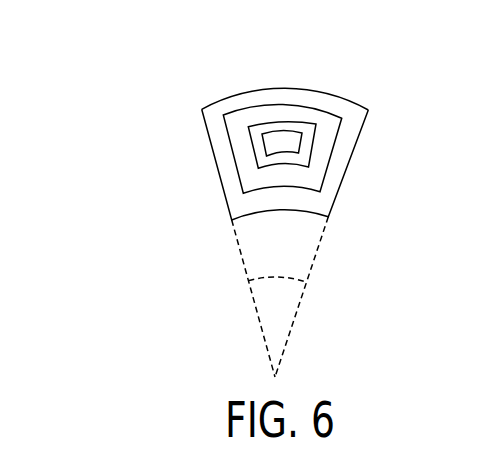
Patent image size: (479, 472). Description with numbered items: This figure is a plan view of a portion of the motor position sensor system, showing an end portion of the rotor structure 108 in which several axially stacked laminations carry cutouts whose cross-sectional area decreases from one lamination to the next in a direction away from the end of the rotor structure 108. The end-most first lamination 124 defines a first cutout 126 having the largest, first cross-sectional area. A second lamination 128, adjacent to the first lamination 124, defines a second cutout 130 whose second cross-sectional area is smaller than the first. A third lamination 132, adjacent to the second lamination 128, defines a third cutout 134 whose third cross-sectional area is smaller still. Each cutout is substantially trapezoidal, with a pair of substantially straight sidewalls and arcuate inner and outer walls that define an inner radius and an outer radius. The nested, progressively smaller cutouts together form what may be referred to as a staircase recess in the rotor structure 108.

The rotor structure 108 is at (177, 128).
The first lamination 124 is at (350, 133).
The first cutout 126 is at (331, 84).
The second lamination 128 is at (315, 168).
The second cutout 130 is at (236, 148).
The third lamination 132 is at (270, 125).
The third cutout 134 is at (278, 169).